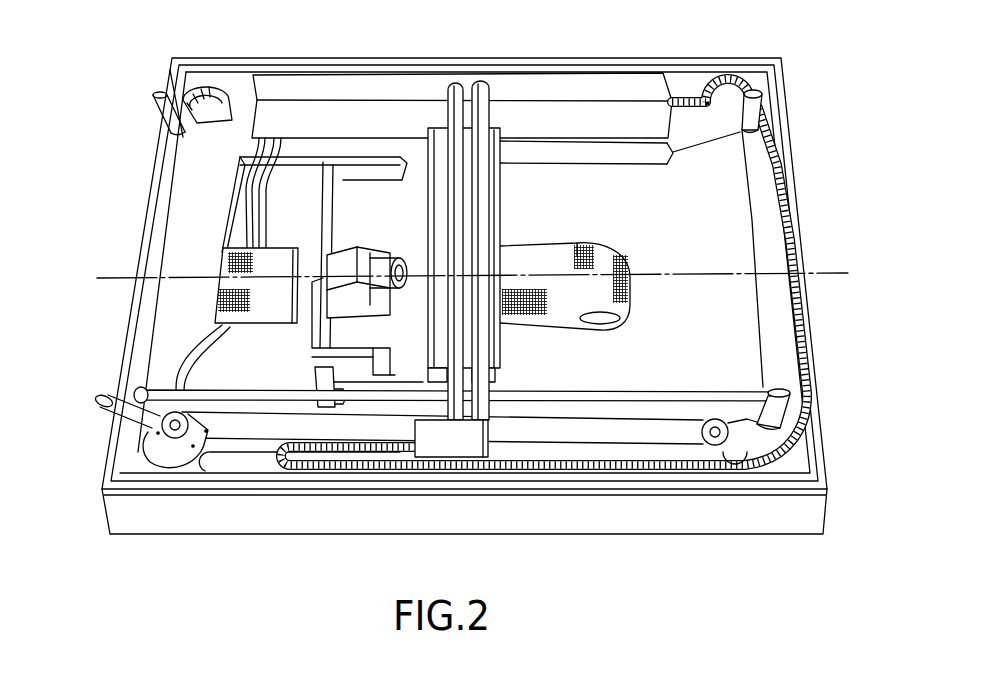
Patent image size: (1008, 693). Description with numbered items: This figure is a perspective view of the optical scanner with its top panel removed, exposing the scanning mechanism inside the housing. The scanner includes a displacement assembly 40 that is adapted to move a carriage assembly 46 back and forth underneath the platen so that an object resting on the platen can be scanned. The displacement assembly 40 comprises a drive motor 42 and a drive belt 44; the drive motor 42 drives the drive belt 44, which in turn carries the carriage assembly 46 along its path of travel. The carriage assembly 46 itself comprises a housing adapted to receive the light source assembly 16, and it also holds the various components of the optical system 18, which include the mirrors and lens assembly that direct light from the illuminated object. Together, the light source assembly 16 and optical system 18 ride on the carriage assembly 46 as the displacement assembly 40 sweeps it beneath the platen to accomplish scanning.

The light source assembly 16 is at (466, 83).
The optical system 18 is at (400, 262).
The displacement assembly 40 is at (433, 499).
The drive motor 42 is at (182, 408).
The drive belt 44 is at (576, 445).
The carriage assembly 46 is at (398, 386).